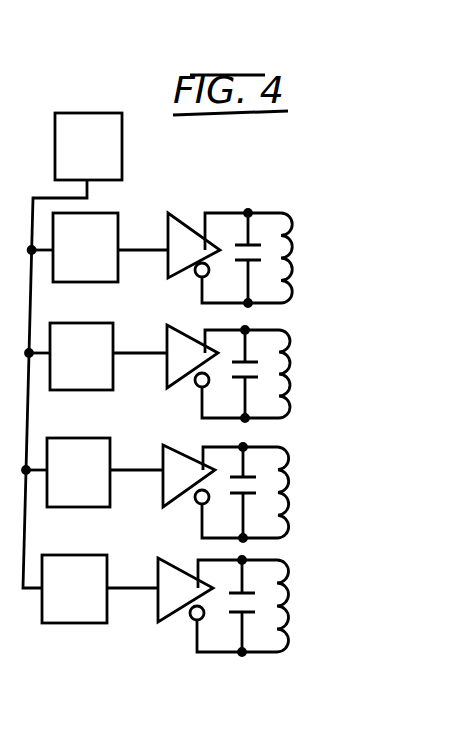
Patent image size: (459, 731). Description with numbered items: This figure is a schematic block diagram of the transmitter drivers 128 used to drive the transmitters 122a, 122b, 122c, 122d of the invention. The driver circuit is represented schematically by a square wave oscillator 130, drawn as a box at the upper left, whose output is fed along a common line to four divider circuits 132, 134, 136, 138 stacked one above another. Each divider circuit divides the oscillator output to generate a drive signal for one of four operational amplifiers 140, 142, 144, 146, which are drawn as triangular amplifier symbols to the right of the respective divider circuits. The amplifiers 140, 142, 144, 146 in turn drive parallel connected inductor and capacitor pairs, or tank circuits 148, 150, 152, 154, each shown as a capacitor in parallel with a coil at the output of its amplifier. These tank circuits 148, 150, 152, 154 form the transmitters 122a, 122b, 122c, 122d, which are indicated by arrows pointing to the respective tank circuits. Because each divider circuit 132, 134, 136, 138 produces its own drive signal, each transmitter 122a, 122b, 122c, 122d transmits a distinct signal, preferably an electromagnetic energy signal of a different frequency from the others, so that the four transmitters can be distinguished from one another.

The transmitter drivers 128 is at (145, 106).
The square wave oscillator 130 is at (122, 140).
The divider circuit 132 is at (108, 213).
The divider circuit 134 is at (108, 323).
The divider circuit 136 is at (102, 438).
The divider circuit 138 is at (100, 555).
The operational amplifier 140 is at (183, 224).
The operational amplifier 142 is at (187, 336).
The operational amplifier 144 is at (183, 455).
The operational amplifier 146 is at (180, 570).
The transmitter 122a is at (266, 191).
The transmitter 122b is at (294, 309).
The transmitter 122c is at (279, 436).
The transmitter 122d is at (274, 559).
The tank circuit 148 is at (283, 213).
The tank circuit 150 is at (284, 332).
The tank circuit 152 is at (284, 449).
The tank circuit 154 is at (289, 569).